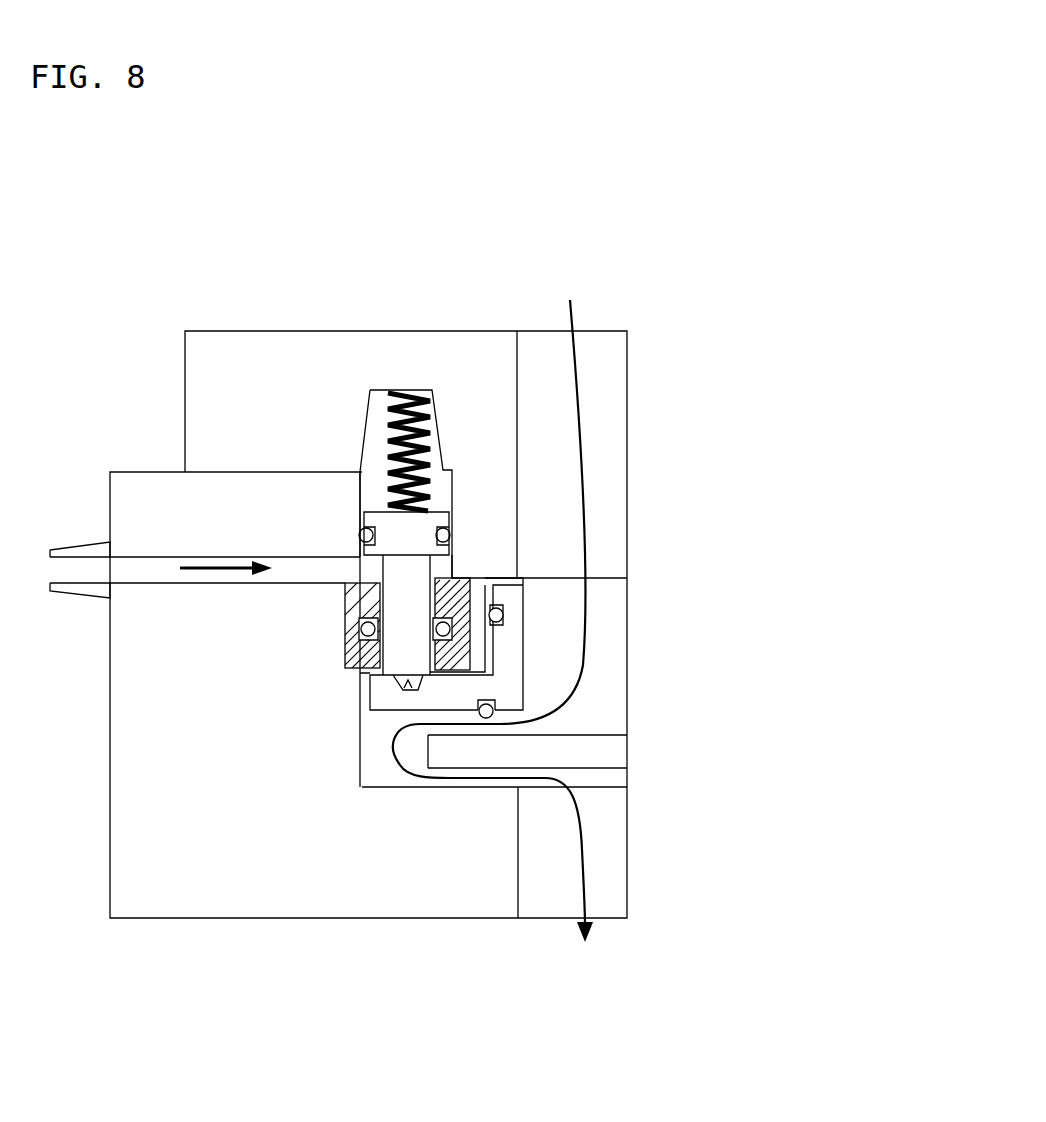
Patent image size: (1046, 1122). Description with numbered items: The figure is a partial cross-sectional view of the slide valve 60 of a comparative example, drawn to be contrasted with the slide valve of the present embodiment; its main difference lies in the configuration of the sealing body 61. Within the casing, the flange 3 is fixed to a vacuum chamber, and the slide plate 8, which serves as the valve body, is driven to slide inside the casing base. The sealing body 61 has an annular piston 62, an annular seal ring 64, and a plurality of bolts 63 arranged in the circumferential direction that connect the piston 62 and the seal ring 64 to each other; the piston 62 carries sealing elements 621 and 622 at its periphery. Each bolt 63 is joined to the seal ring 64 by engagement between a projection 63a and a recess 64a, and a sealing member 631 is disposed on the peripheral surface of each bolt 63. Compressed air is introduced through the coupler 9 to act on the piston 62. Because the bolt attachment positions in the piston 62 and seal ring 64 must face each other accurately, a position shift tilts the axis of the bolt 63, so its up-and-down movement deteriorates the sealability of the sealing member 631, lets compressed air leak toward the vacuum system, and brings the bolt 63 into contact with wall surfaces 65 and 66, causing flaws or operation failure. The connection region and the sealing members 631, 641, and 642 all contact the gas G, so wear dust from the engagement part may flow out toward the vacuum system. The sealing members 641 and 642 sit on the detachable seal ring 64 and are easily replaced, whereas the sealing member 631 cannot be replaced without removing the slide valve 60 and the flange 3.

The flange 3 is at (230, 360).
The coupler 9 is at (66, 550).
The slide valve 60 is at (463, 1081).
The sealing body 61 is at (436, 572).
The annular piston 62 is at (425, 527).
The piston O-ring 621 is at (366, 528).
The piston O-ring 622 is at (447, 533).
The bolt 63 is at (413, 606).
The projection 63a is at (398, 683).
The sealing member 631 is at (384, 592).
The wall surface 65 is at (368, 628).
The wall surface 66 is at (429, 609).
The annular seal ring 64 is at (505, 650).
The recess 64a is at (404, 690).
The sealing member 641 is at (500, 618).
The sealing member 642 is at (495, 712).
The slide plate 8 is at (565, 750).
The gas G is at (583, 853).